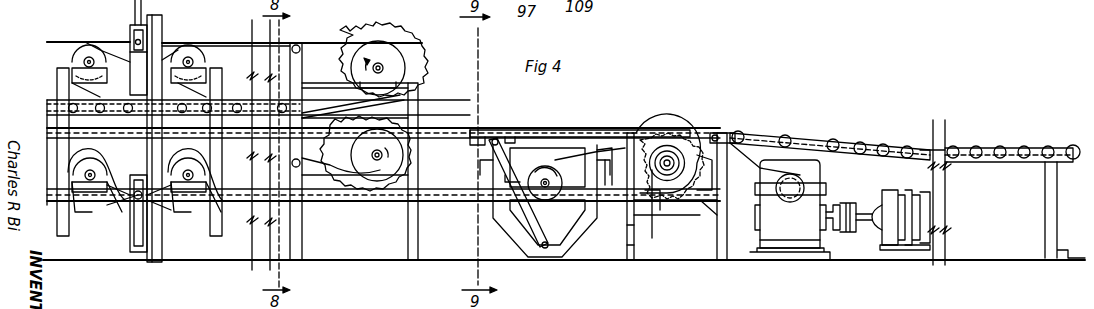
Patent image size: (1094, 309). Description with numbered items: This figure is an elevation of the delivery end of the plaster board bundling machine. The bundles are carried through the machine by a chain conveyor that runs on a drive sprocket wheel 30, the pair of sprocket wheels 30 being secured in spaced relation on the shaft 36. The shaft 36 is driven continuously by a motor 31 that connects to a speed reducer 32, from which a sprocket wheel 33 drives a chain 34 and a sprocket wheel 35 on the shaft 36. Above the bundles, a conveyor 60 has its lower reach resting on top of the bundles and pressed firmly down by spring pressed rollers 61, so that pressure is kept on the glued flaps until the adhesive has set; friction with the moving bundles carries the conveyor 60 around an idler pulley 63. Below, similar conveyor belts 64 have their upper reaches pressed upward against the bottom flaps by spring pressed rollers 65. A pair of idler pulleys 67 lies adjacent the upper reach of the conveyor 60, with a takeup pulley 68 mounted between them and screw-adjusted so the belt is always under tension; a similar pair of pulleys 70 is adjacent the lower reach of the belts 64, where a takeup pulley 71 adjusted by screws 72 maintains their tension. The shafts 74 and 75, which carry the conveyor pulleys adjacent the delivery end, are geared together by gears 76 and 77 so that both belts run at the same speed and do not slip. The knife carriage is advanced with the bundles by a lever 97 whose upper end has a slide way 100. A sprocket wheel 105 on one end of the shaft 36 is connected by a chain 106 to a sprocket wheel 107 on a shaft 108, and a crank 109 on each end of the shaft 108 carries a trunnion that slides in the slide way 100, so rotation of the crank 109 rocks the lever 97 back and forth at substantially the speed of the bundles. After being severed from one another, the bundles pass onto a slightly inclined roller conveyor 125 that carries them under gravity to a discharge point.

The drive sprocket wheel 30 is at (660, 146).
The motor 31 is at (899, 196).
The speed reducer 32 is at (820, 175).
The sprocket wheel 33 is at (800, 178).
The chain 34 is at (750, 164).
The sprocket wheel 35 is at (676, 135).
The shaft 36 is at (667, 168).
The conveyor 60 is at (305, 43).
The spring pressed rollers 61 is at (237, 105).
The idler pulley 63 is at (392, 60).
The conveyor belts 64 is at (345, 142).
The spring pressed rollers 65 is at (60, 137).
The idler pulleys 67 is at (98, 52).
The takeup pulley 68 is at (133, 48).
The pulleys 70 is at (148, 198).
The takeup pulley 71 is at (134, 198).
The screws 72 is at (130, 165).
The shaft 74 is at (384, 68).
The shaft 75 is at (395, 158).
The gear 76 is at (420, 68).
The gear 77 is at (398, 125).
The lever 97 is at (540, 228).
The slide way 100 is at (505, 178).
The sprocket wheel 105 is at (652, 200).
The chain 106 is at (612, 170).
The sprocket wheel 107 is at (565, 178).
The shaft 108 is at (544, 178).
The crank 109 is at (524, 196).
The roller conveyor 125 is at (885, 143).